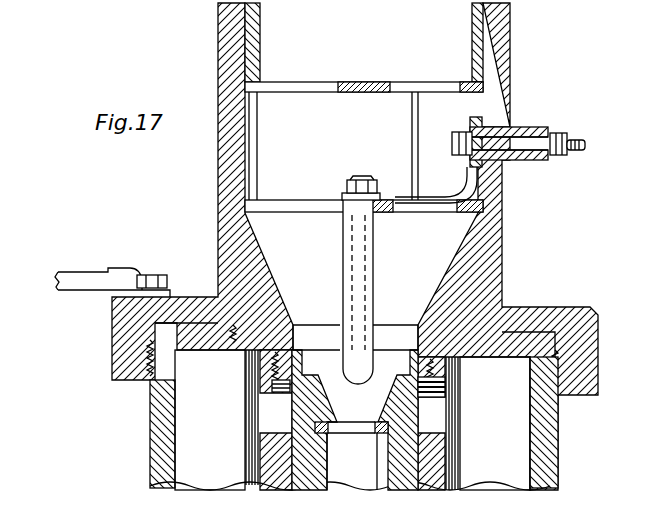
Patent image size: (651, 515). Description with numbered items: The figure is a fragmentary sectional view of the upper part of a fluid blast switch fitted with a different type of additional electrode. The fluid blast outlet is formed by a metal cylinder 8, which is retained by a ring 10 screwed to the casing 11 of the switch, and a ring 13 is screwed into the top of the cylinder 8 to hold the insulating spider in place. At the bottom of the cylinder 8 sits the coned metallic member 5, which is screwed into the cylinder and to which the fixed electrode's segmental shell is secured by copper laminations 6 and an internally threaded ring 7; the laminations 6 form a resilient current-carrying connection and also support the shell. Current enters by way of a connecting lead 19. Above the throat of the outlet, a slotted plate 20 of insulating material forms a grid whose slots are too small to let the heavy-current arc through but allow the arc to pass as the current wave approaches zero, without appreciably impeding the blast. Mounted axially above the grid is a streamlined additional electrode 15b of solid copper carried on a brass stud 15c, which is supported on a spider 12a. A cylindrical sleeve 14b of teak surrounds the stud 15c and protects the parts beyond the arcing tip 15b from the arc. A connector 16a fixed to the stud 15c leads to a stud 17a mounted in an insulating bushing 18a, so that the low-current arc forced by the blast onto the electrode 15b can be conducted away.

The coned metallic member 5 is at (455, 305).
The copper laminations 6 is at (250, 413).
The internally threaded ring 7 is at (438, 381).
The metal cylinder 8 is at (491, 251).
The ring 10 is at (130, 340).
The casing 11 is at (150, 435).
The spider 12a is at (294, 90).
The ring 13 is at (495, 13).
The cylindrical sleeve 14b is at (349, 238).
The streamlined additional electrode 15b is at (276, 370).
The brass stud 15c is at (368, 260).
The connector 16a is at (440, 195).
The stud 17a is at (541, 152).
The insulating bushing 18a is at (545, 128).
The connecting lead 19 is at (92, 281).
The slotted plate 20 is at (390, 430).